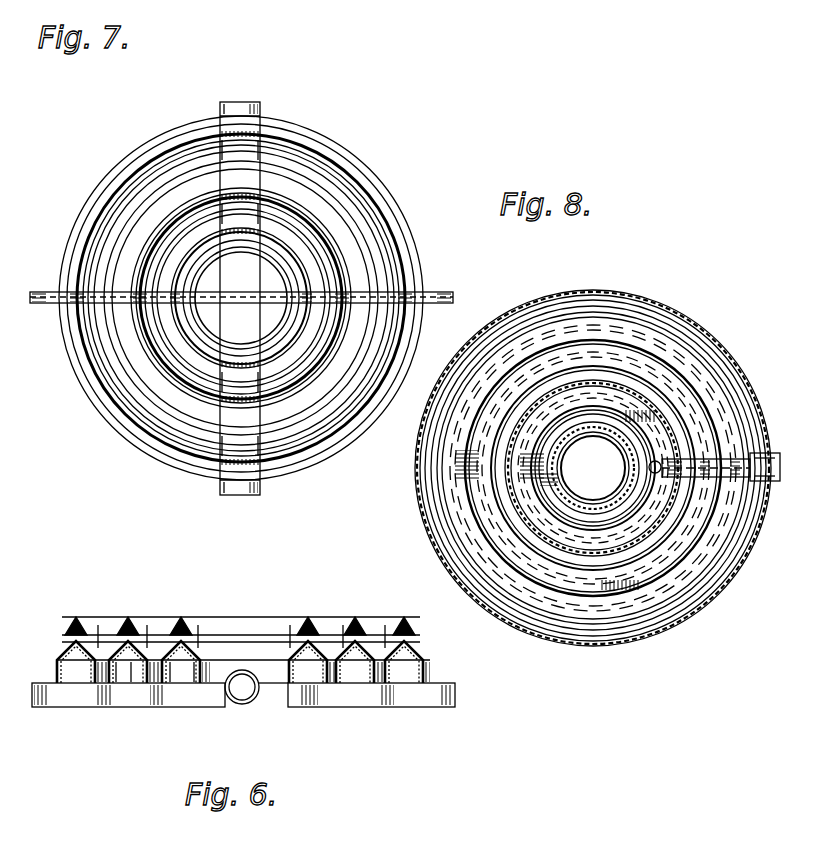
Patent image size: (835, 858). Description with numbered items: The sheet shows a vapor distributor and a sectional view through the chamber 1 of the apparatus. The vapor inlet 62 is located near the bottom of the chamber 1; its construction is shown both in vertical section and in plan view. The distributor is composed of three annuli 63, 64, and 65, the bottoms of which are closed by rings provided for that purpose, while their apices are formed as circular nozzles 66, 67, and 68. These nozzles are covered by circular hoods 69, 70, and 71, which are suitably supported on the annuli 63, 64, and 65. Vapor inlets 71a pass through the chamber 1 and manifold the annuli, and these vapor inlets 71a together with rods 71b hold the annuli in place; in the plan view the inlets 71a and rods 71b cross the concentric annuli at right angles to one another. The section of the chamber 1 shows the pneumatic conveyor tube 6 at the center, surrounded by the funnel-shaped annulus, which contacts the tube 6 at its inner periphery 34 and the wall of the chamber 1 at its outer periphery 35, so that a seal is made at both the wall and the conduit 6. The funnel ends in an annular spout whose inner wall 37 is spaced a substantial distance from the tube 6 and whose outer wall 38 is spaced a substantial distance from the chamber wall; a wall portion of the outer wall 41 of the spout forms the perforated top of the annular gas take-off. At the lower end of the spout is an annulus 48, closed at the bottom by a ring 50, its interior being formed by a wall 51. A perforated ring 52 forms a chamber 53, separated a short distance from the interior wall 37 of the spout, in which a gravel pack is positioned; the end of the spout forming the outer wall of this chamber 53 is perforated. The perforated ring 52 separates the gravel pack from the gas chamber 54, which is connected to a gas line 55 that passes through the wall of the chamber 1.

In FIG. 8, the chamber 1 is at (518, 310).
In FIG. 8, the pneumatic conveyor tube 6 is at (598, 463).
In FIG. 8, the inner periphery 34 is at (617, 440).
In FIG. 8, the outer periphery 35 is at (481, 342).
In FIG. 8, the inner wall 37 is at (513, 528).
In FIG. 8, the outer wall 38 is at (507, 498).
In FIG. 8, the outer wall 41 is at (437, 444).
In FIG. 8, the annulus 48 is at (585, 520).
In FIG. 8, the ring 50 is at (572, 476).
In FIG. 8, the wall 51 is at (584, 518).
In FIG. 8, the perforated ring 52 is at (617, 404).
In FIG. 8, the chamber 53 is at (578, 512).
In FIG. 8, the gas chamber 54 is at (645, 513).
In FIG. 8, the gas line 55 is at (705, 480).
In FIG. 7, the vapor inlet 62 is at (368, 176).
In FIG. 6, the vapor inlet 62 is at (310, 616).
In FIG. 6, the annulus 63 is at (58, 677).
In FIG. 6, the annulus 64 is at (117, 681).
In FIG. 6, the annulus 65 is at (171, 690).
In FIG. 6, the circular nozzle 66 is at (60, 652).
In FIG. 6, the circular nozzle 67 is at (132, 681).
In FIG. 6, the circular nozzle 68 is at (195, 695).
In FIG. 7, the circular hood 69 is at (105, 199).
In FIG. 6, the circular hood 69 is at (77, 616).
In FIG. 7, the circular hood 70 is at (138, 245).
In FIG. 6, the circular hood 70 is at (130, 616).
In FIG. 7, the circular hood 71 is at (177, 273).
In FIG. 6, the circular hood 71 is at (183, 616).
In FIG. 7, the vapor inlet 71a is at (220, 109).
In FIG. 6, the vapor inlet 71a is at (246, 694).
In FIG. 7, the rod 71b is at (42, 306).
In FIG. 6, the rod 71b is at (57, 698).